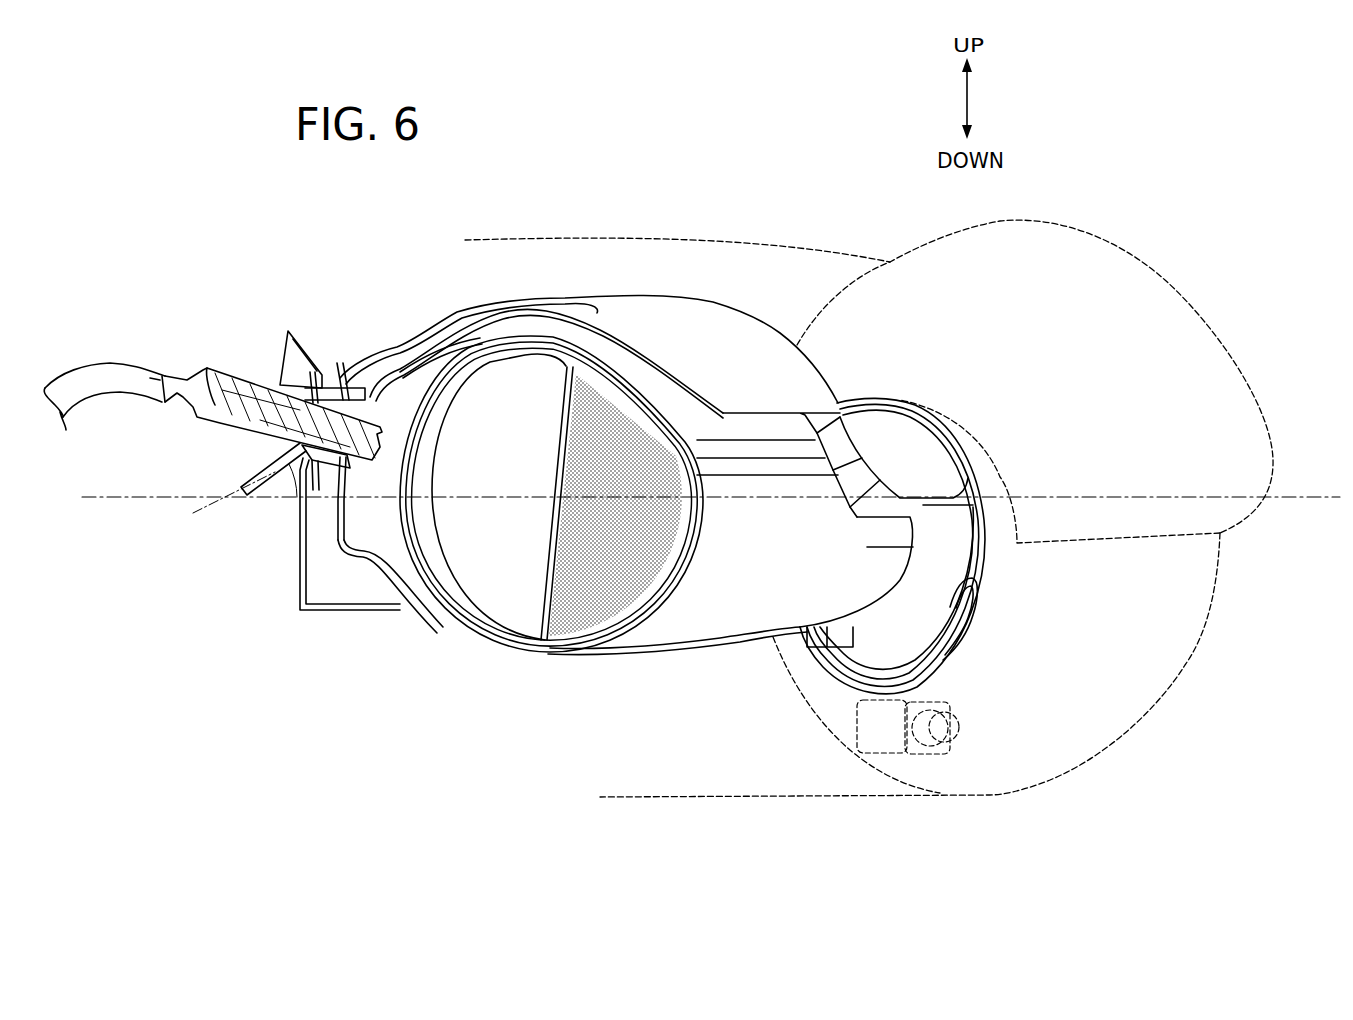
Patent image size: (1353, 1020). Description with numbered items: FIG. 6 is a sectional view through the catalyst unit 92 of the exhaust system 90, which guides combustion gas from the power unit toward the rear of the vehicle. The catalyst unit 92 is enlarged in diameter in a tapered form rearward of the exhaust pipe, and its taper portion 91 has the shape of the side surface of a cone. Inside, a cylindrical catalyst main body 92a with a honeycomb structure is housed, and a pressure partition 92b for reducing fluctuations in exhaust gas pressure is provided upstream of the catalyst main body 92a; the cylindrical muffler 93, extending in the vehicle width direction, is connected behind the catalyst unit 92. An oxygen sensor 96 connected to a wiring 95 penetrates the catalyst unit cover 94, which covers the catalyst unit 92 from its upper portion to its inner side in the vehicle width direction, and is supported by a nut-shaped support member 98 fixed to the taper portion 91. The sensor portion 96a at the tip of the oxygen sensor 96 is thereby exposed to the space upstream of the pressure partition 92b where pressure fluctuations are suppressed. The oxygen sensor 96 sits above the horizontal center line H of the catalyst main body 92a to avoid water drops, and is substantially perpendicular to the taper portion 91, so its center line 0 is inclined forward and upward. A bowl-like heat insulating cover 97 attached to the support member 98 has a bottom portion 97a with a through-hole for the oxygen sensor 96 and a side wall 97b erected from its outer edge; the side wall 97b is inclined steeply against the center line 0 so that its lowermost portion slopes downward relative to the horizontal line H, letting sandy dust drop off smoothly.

The exhaust system 90 is at (618, 183).
The taper portion 91 is at (433, 395).
The catalyst unit 92 is at (705, 617).
The catalyst main body 92a is at (595, 597).
The pressure partition 92b is at (480, 560).
The muffler 93 is at (763, 800).
The catalyst unit cover 94 is at (740, 335).
The wiring 95 is at (93, 387).
The oxygen sensor 96 is at (228, 377).
The sensor portion 96a is at (373, 545).
The heat insulating cover 97 is at (244, 457).
The bottom portion 97a is at (280, 386).
The side wall 97b is at (307, 383).
The support member 98 is at (337, 387).
The center line 0 is at (158, 375).
The horizontal line H is at (700, 499).